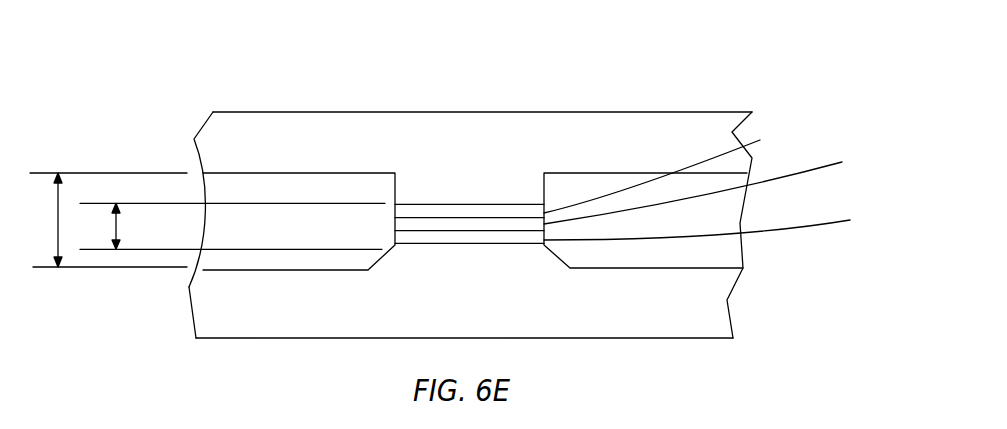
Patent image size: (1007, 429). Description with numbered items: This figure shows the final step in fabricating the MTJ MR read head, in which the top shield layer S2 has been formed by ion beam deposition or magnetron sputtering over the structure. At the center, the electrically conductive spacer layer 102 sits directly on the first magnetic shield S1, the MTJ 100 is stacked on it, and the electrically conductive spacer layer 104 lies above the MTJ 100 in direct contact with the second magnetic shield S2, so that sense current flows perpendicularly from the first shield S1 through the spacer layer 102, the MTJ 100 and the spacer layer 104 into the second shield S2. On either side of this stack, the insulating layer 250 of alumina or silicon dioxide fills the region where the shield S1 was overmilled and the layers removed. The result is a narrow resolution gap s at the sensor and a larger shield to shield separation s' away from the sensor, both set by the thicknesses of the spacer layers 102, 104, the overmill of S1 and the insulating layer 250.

The insulating layer 250 is at (240, 188).
The electrically conductive spacer layer 104 is at (670, 160).
The magnetic tunnel junction 100 is at (705, 175).
The electrically conductive spacer layer 102 is at (719, 220).
The first magnetic shield S1 is at (720, 273).
The second magnetic shield S2 is at (433, 125).
The resolution gap S is at (118, 211).
The shield to shield separation S' is at (108, 205).